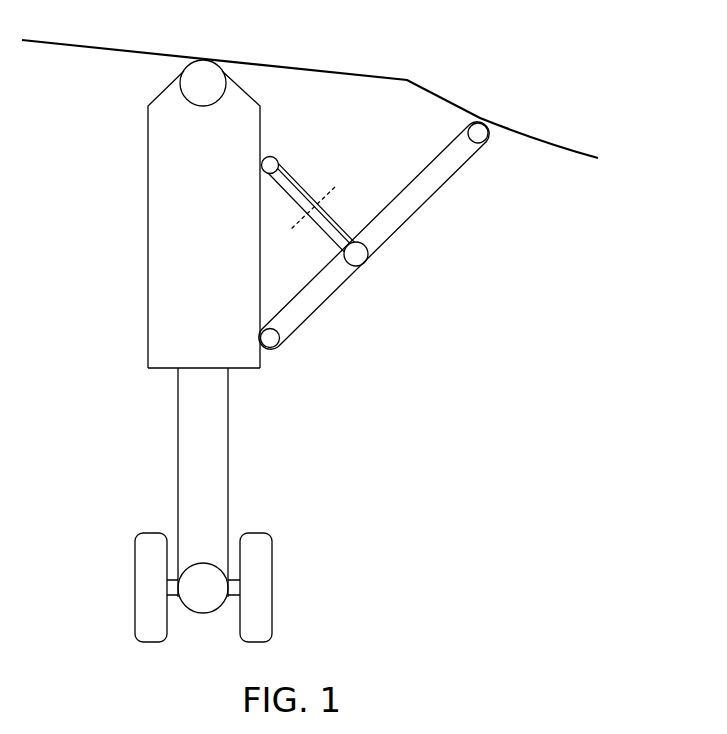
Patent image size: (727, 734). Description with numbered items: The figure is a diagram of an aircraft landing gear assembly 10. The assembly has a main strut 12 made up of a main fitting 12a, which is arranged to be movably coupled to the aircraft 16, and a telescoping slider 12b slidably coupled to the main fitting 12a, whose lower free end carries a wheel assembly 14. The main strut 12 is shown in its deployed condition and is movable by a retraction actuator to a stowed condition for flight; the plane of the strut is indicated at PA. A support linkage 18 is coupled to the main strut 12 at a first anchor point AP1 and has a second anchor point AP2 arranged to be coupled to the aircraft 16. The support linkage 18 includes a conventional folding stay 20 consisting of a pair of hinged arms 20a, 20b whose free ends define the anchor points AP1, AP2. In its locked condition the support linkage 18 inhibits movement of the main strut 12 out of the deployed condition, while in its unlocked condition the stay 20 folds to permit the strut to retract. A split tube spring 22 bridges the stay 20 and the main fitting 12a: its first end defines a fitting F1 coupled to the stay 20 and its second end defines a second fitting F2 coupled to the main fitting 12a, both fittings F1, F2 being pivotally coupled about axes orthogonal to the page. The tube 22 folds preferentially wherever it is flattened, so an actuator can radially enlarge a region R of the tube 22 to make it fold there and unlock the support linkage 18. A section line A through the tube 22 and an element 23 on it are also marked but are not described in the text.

The aircraft landing gear assembly 10 is at (467, 85).
The main strut 12 is at (166, 306).
The main fitting 12a is at (166, 191).
The telescoping slider 12b is at (187, 457).
The wheel assembly 14 is at (277, 547).
The aircraft 16 is at (70, 48).
The support linkage 18 is at (404, 265).
The folding stay 20 is at (404, 270).
The stay arm 20a is at (320, 310).
The stay arm 20b is at (457, 180).
The split tube spring 22 is at (328, 200).
The actuator portion of lock link 23 is at (337, 218).
The plane of the strut PA is at (203, 82).
The first anchor point AP1 is at (278, 350).
The second anchor point AP2 is at (489, 137).
The fitting F1 is at (360, 258).
The second fitting F2 is at (272, 160).
The section line A- A is at (311, 206).
The region R is at (318, 191).